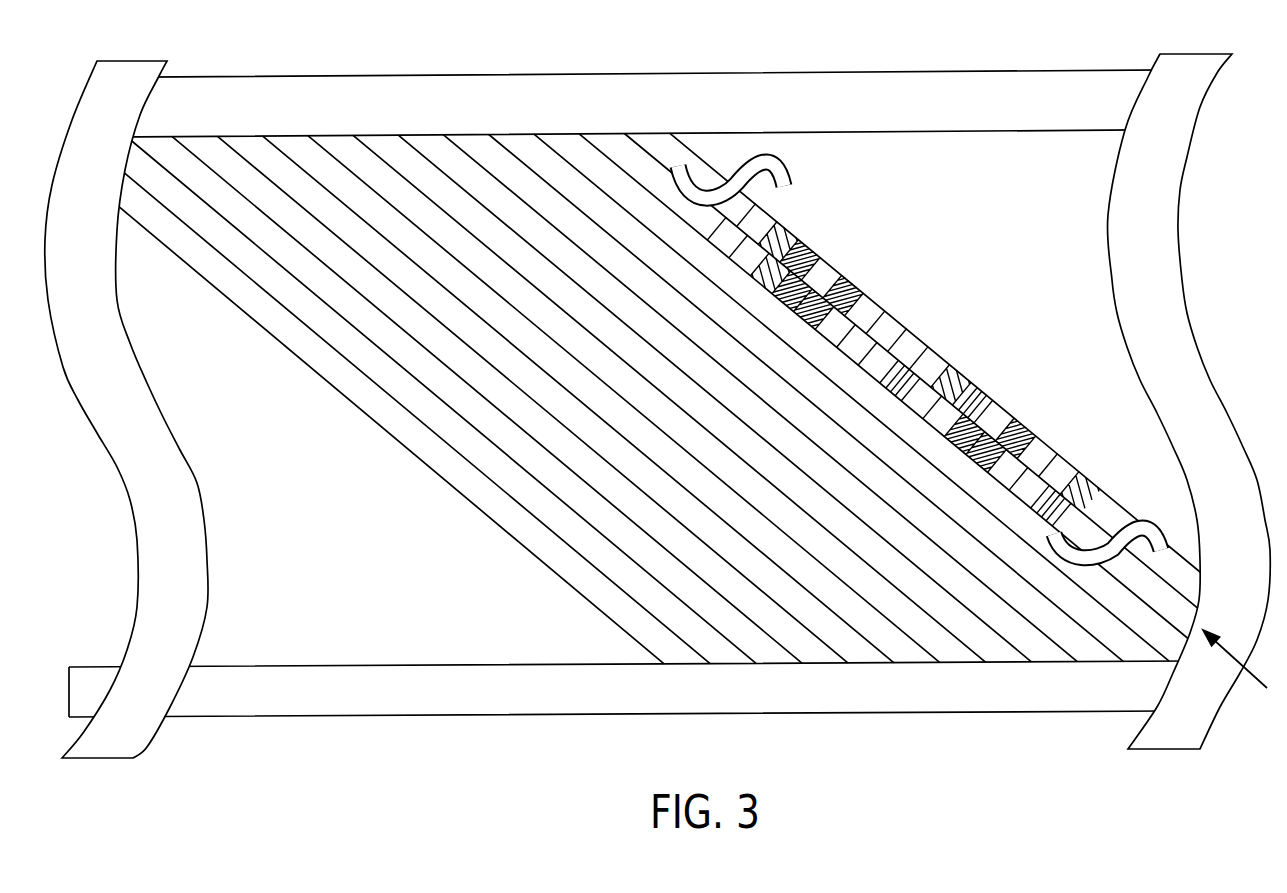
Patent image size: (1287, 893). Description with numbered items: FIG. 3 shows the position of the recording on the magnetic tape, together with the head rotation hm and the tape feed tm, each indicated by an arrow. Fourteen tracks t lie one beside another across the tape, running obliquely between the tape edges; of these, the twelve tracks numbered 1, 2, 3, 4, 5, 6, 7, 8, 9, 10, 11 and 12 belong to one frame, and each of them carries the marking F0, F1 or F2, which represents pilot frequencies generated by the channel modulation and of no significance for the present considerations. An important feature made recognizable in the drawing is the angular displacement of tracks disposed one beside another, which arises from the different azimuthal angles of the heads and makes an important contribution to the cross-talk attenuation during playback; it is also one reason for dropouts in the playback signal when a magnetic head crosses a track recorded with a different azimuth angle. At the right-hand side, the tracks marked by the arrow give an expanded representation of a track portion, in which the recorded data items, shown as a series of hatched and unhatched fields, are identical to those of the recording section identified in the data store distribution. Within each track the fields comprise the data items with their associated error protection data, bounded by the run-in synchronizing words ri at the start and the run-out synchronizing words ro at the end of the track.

The track t1 1 is at (377, 422).
The track t2 2 is at (400, 403).
The track t3 3 is at (441, 400).
The track t4 4 is at (487, 400).
The track t5 5 is at (533, 399).
The track t6 6 is at (578, 399).
The track t7 7 is at (624, 399).
The track t8 8 is at (669, 398).
The track t9 9 is at (714, 398).
The track t10 10 is at (761, 398).
The track t11 11 is at (806, 398).
The track t12 12 is at (851, 397).
The track t is at (737, 399).
The head rotation hm is at (907, 231).
The tape feed tm is at (612, 38).
The run-out synchronizing words ro is at (126, 409).
The run-in synchronizing words ri is at (529, 580).